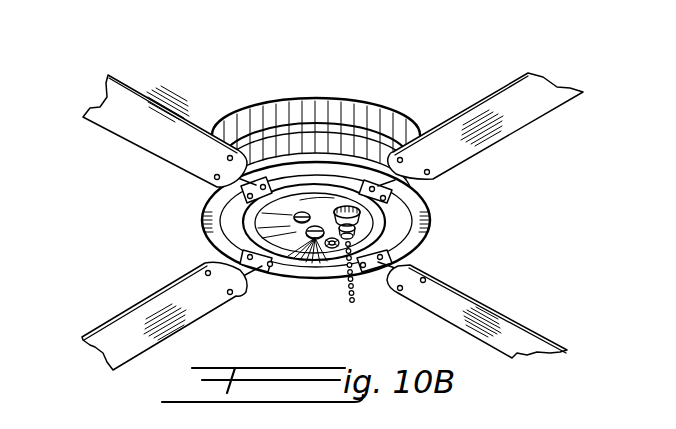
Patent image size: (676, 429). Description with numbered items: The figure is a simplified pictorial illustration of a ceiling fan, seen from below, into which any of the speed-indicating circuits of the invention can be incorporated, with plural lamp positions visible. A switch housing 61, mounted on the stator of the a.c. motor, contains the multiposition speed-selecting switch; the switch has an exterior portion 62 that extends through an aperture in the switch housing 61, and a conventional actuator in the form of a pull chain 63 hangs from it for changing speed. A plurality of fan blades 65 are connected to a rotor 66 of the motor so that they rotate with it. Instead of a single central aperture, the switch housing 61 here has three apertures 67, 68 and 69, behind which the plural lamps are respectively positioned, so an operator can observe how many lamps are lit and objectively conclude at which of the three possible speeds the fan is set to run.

The switch housing 61 is at (337, 207).
The exterior portion 62 is at (362, 222).
The pull chain 63 is at (353, 303).
The fan blades 65 is at (148, 113).
The rotor 66 is at (295, 178).
The aperture 67 is at (303, 224).
The aperture 68 is at (315, 239).
The aperture 69 is at (332, 249).